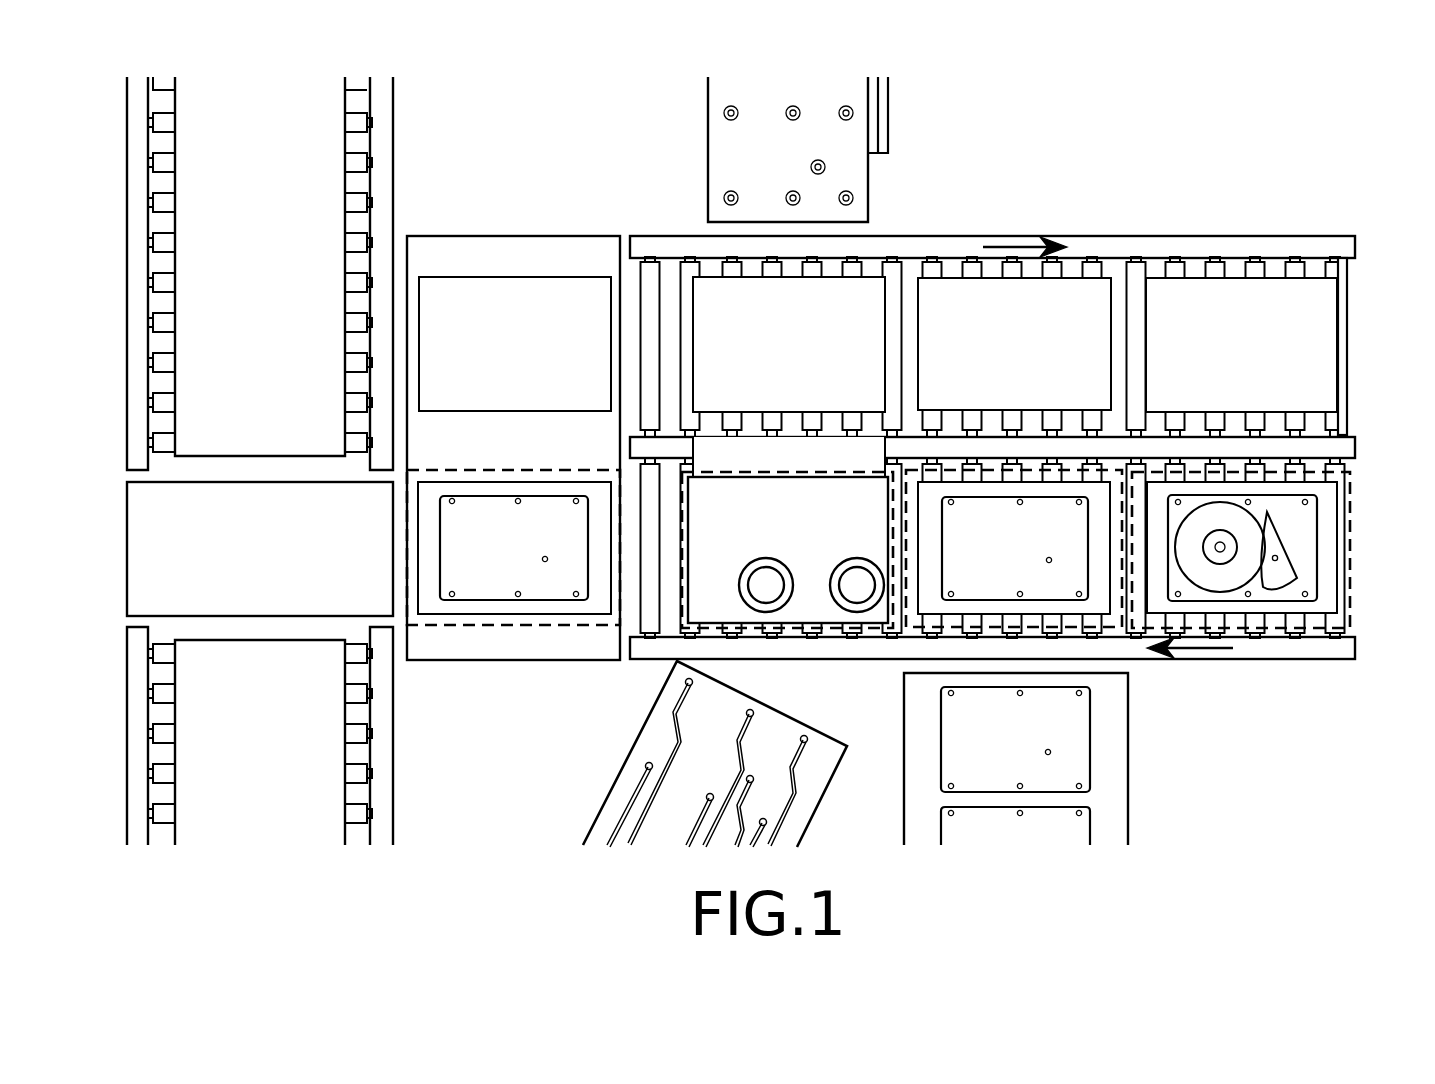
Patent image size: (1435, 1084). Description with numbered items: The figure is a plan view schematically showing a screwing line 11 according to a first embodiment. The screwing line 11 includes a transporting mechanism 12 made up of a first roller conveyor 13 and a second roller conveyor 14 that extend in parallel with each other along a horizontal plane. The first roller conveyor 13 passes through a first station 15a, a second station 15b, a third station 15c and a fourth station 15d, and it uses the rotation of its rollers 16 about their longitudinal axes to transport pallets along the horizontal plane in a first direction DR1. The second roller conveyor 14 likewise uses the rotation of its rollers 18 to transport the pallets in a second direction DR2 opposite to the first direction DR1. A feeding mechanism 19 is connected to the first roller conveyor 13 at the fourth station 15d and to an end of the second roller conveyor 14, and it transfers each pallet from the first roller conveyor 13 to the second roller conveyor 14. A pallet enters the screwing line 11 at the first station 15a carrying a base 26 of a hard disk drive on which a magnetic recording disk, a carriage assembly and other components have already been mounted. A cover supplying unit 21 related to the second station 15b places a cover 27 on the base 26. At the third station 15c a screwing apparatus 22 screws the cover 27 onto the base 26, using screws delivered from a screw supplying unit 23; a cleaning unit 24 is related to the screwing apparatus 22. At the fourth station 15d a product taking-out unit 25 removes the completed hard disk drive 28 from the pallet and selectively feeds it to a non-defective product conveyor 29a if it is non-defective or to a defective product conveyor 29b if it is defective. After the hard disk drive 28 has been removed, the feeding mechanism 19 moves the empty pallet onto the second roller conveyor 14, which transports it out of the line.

The screwing line 11 is at (1291, 166).
The transporting mechanism 12 is at (665, 234).
The first roller conveyor 13 is at (845, 660).
The second roller conveyor 14 is at (1205, 236).
The first station 15a is at (1274, 541).
The second station 15b is at (1014, 494).
The third station 15c is at (787, 494).
The fourth station 15d is at (513, 573).
The rollers 16 is at (1347, 500).
The rollers 18 is at (1347, 385).
The feeding mechanism 19 is at (513, 420).
The cover supplying unit 21 is at (1128, 758).
The screwing apparatus 22 is at (702, 482).
The screw supplying unit 23 is at (630, 748).
The cleaning unit 24 is at (708, 122).
The product taking-out unit 25 is at (288, 482).
The base 26 is at (1272, 600).
The cover 27 is at (1002, 551).
The hard disk drive 28 is at (478, 497).
The non-defective product conveyor 29a is at (395, 755).
The defective product conveyor 29b is at (395, 166).
The first direction DR1 is at (1200, 652).
The second direction DR2 is at (1030, 222).